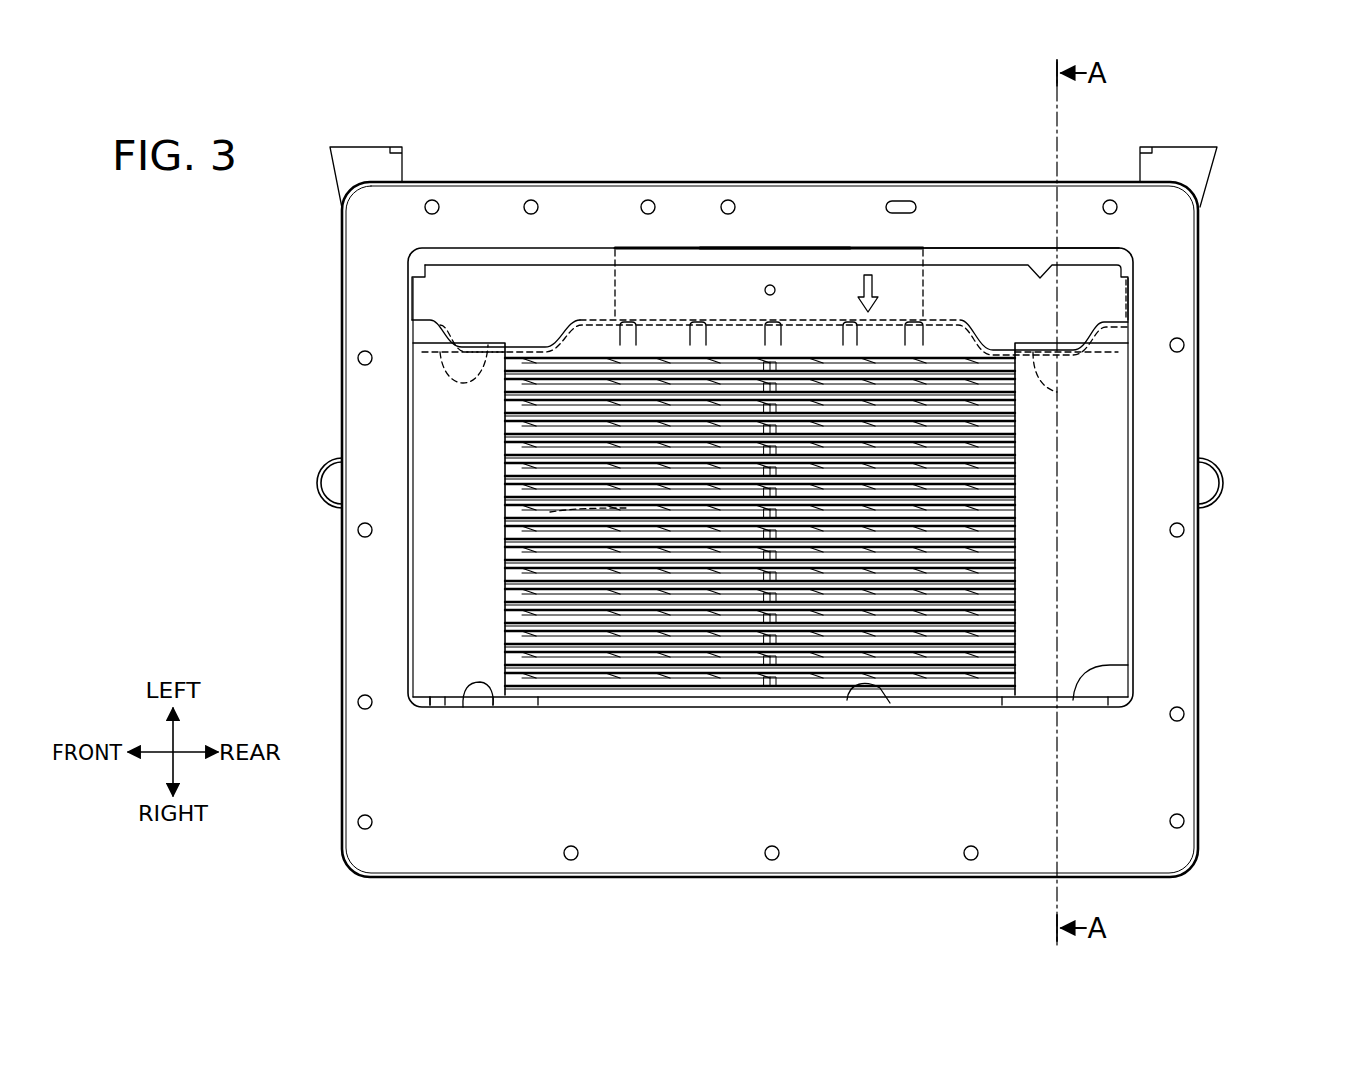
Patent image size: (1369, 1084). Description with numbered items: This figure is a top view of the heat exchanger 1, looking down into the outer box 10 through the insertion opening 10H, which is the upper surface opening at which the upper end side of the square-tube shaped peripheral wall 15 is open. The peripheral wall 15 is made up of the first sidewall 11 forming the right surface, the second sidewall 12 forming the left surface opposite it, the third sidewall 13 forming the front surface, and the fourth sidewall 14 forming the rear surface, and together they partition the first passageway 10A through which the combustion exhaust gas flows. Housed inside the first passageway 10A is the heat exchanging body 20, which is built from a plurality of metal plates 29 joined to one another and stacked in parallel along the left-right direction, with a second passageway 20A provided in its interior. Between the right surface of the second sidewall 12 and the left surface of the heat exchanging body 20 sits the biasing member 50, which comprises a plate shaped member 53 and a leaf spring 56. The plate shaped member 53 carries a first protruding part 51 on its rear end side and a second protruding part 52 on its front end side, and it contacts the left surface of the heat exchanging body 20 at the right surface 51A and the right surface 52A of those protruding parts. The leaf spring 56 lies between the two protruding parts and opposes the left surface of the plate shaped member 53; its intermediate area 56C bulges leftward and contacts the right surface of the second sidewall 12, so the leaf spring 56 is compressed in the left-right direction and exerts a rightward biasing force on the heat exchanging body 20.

The heat exchanger 1 is at (1244, 220).
The outer box 10 is at (1207, 627).
The first passageway 10A is at (847, 700).
The insertion opening 10H is at (1120, 666).
The first sidewall 11 is at (463, 707).
The second sidewall 12 is at (956, 255).
The third sidewall 13 is at (428, 448).
The fourth sidewall 14 is at (1120, 450).
The peripheral wall 15 is at (443, 700).
The heat exchanging body 20 is at (764, 524).
The second passageway 20A is at (550, 512).
The metal plates 29 is at (597, 350).
The biasing member 50 is at (608, 260).
The first protruding part 51 is at (997, 332).
The right surface of the first protruding part 51A is at (1057, 392).
The second protruding part 52 is at (530, 335).
The right surface of the second protruding part 52A is at (455, 382).
The plate shaped member 53 is at (1140, 306).
The leaf spring 56 is at (840, 246).
The intermediate area 56C is at (775, 248).